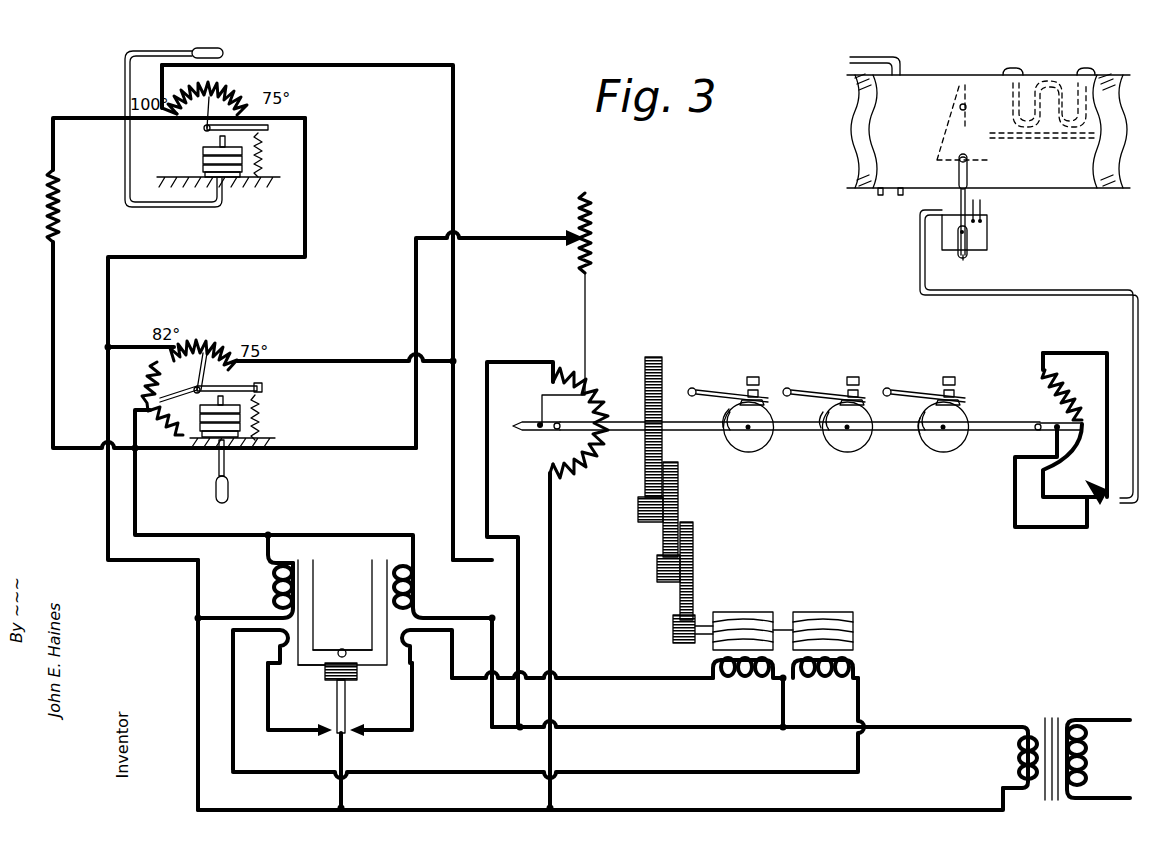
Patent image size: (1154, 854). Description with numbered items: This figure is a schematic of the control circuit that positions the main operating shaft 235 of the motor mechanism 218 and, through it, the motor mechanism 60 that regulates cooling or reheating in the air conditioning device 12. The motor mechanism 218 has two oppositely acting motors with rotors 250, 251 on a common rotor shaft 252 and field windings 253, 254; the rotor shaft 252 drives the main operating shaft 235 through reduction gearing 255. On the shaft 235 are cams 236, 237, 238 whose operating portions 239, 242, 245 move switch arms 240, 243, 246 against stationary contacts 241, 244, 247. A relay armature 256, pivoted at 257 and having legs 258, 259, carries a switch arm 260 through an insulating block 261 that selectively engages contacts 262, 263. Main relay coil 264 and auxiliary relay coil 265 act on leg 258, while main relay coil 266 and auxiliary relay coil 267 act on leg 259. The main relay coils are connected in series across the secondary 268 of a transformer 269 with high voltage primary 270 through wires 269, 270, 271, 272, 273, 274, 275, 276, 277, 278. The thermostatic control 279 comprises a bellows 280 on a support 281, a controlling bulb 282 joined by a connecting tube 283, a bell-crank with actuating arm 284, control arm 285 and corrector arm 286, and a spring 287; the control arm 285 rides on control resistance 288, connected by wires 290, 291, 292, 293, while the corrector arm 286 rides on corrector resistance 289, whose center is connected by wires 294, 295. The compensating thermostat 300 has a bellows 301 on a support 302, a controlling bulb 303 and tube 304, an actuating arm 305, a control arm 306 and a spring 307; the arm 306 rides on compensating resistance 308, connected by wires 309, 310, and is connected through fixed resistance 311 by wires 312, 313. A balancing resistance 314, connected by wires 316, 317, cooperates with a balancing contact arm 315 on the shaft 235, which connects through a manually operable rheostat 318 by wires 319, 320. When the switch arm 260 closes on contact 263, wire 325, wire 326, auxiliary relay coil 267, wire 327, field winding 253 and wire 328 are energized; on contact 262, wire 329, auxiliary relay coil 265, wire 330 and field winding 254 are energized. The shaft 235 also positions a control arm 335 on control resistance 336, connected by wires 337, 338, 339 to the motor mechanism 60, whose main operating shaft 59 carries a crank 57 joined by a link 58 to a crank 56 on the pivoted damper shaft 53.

The air conditioning device 12 is at (934, 76).
The pivoted shaft 53 is at (964, 156).
The crank 56 is at (968, 180).
The crank 57 is at (964, 254).
The link 58 is at (982, 208).
The main operating shaft 59 is at (978, 231).
The motor mechanism 60 is at (943, 248).
The motor mechanism 218 is at (902, 610).
The main operating shaft 235 is at (797, 434).
The cam 236 is at (756, 450).
The cam 237 is at (856, 450).
The cam 238 is at (958, 448).
The operating portion 239 is at (724, 430).
The switch arm 240 is at (704, 382).
The stationary contact 241 is at (752, 375).
The operating portion 242 is at (826, 414).
The switch arm 243 is at (804, 386).
The stationary contact 244 is at (854, 375).
The operating portion 245 is at (922, 436).
The switch arm 246 is at (902, 390).
The stationary contact 247 is at (949, 376).
The rotor 250 is at (754, 613).
The rotor 251 is at (824, 610).
The rotor shaft 252 is at (706, 616).
The field winding 253 is at (741, 688).
The field winding 254 is at (822, 678).
The reduction gearing 255 is at (711, 536).
The armature 256 is at (312, 662).
The pivot 257 is at (343, 648).
The leg 258 is at (311, 584).
The leg 259 is at (370, 602).
The switch arm 260 is at (346, 712).
The block of insulating material 261 is at (355, 673).
The contact 262 is at (328, 736).
The contact 263 is at (358, 736).
The main relay coil 264 is at (272, 576).
The auxiliary relay coil 265 is at (278, 646).
The main relay coil 266 is at (412, 580).
The auxiliary relay coil 267 is at (400, 648).
The secondary 268 is at (1022, 762).
The transformer 269 is at (1047, 714).
The high voltage primary 270 is at (454, 810).
The wire 271 is at (198, 653).
The wire 272 is at (246, 618).
The wire 273 is at (273, 550).
The wire 274 is at (346, 535).
The wire 275 is at (456, 618).
The wire 276 is at (490, 707).
The wire 277 is at (654, 727).
The wire 278 is at (964, 726).
The thermostatic control 279 is at (318, 410).
The pressure responsive member 280 is at (202, 420).
The support 281 is at (267, 438).
The controlling bulb 282 is at (228, 493).
The connecting tube 283 is at (224, 469).
The actuating arm 284 is at (264, 386).
The control arm 285 is at (212, 382).
The corrector arm 286 is at (184, 394).
The spring 287 is at (265, 411).
The control resistance 288 is at (202, 342).
The corrector resistance 289 is at (150, 376).
The wire 290 is at (138, 344).
The wire 291 is at (198, 582).
The wire 292 is at (341, 360).
The wire 293 is at (453, 484).
The wire 294 is at (136, 442).
The wire 295 is at (167, 535).
The compensating thermostat 300 is at (264, 218).
The bellows 301 is at (203, 150).
The support 302 is at (190, 178).
The controlling bulb 303 is at (224, 52).
The tube 304 is at (124, 80).
The actuating arm 305 is at (258, 126).
The control arm 306 is at (209, 120).
The spring 307 is at (262, 158).
The compensating resistance 308 is at (238, 88).
The wire 309 is at (305, 215).
The wire 310 is at (450, 143).
The fixed resistance 311 is at (59, 227).
The wire 312 is at (53, 182).
The wire 313 is at (53, 326).
The balancing resistance 314 is at (524, 470).
The balancing contact arm 315 is at (534, 430).
The wire 316 is at (550, 583).
The wire 317 is at (490, 528).
The manually operable rheostat 318 is at (560, 194).
The wire 319 is at (586, 302).
The wire 320 is at (414, 298).
The wire 325 is at (344, 796).
The wire 326 is at (414, 726).
The wire 327 is at (618, 678).
The wire 328 is at (782, 714).
The wire 329 is at (269, 713).
The wire 330 is at (814, 772).
The control arm 335 is at (1048, 422).
The control resistance 336 is at (1070, 388).
The wire 337 is at (1060, 527).
The wire 338 is at (1062, 503).
The wire 339 is at (1084, 352).